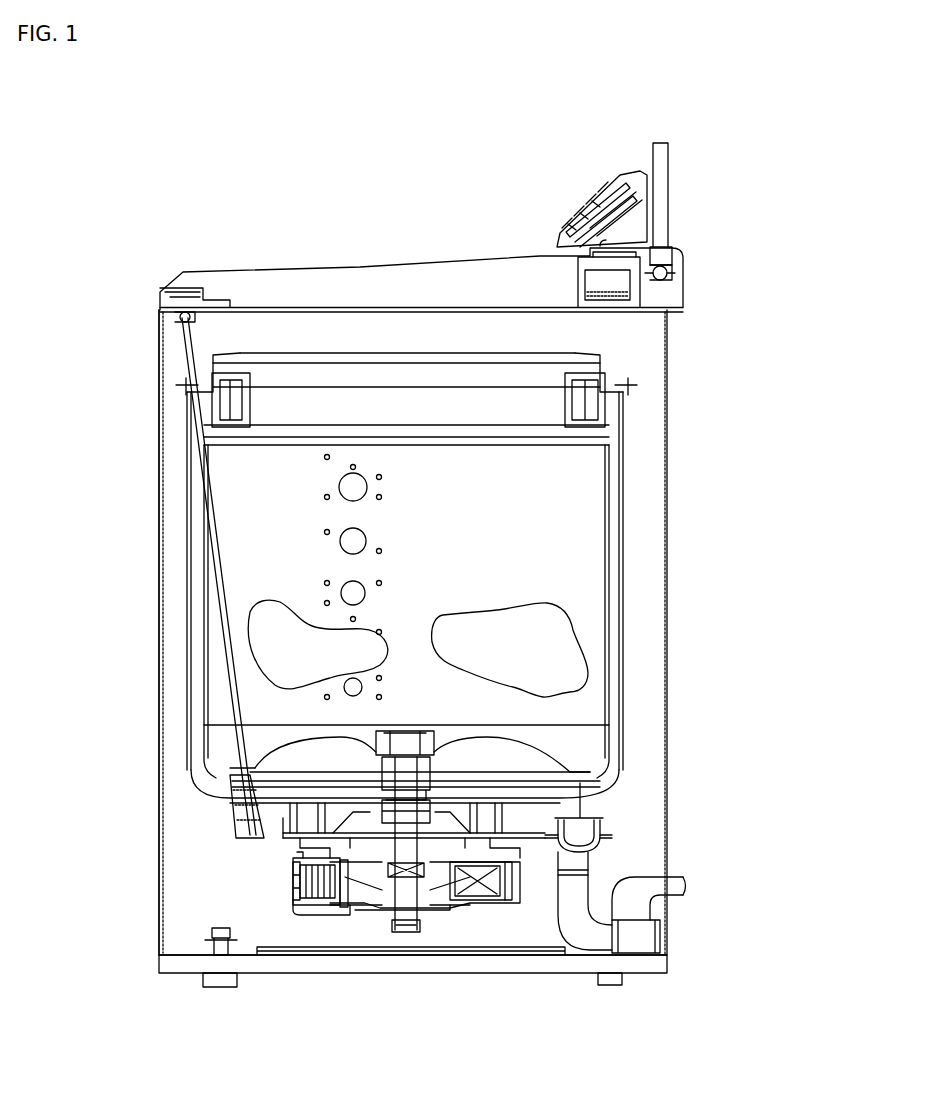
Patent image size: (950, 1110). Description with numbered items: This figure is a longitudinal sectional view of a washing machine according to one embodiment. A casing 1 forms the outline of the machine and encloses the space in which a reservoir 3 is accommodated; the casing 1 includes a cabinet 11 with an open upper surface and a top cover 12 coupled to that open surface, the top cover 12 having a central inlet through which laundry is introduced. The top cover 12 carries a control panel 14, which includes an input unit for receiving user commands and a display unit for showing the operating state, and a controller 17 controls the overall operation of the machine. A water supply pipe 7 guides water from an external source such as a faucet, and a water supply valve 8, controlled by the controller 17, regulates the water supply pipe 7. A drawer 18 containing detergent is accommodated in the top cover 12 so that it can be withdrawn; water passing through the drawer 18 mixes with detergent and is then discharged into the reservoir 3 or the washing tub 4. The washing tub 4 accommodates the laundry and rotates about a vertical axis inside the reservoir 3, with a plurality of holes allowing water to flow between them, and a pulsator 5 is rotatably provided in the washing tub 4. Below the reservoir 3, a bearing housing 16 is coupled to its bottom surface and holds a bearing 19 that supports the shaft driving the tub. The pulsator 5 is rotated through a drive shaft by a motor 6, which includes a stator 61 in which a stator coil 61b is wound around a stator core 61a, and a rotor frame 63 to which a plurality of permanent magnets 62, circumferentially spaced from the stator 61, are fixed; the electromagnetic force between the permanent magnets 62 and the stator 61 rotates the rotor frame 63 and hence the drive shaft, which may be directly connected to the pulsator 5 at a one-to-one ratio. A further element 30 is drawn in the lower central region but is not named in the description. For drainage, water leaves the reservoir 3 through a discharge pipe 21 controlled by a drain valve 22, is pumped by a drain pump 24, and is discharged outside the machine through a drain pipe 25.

The casing 1 is at (130, 187).
The cabinet 11 is at (159, 338).
The top cover 12 is at (177, 287).
The control panel 14 is at (588, 190).
The controller 17 is at (633, 208).
The water supply pipe 7 is at (663, 162).
The water supply valve 8 is at (680, 265).
The drawer 18 is at (578, 287).
The reservoir 3 is at (188, 510).
The washing tub 4 is at (205, 570).
The pulsator 5 is at (283, 755).
The bearing 19 is at (345, 812).
The bearing housing 16 is at (330, 850).
The rotating shaft 30 is at (405, 890).
The motor 6 is at (463, 902).
The stator 61 is at (372, 1028).
The stator core 61a is at (347, 907).
The stator coil 61b is at (313, 900).
The permanent magnets 62 is at (293, 893).
The rotor frame 63 is at (295, 885).
The drain valve 22 is at (577, 837).
The discharge pipe 21 is at (595, 937).
The drain pump 24 is at (643, 938).
The drain pipe 25 is at (675, 887).